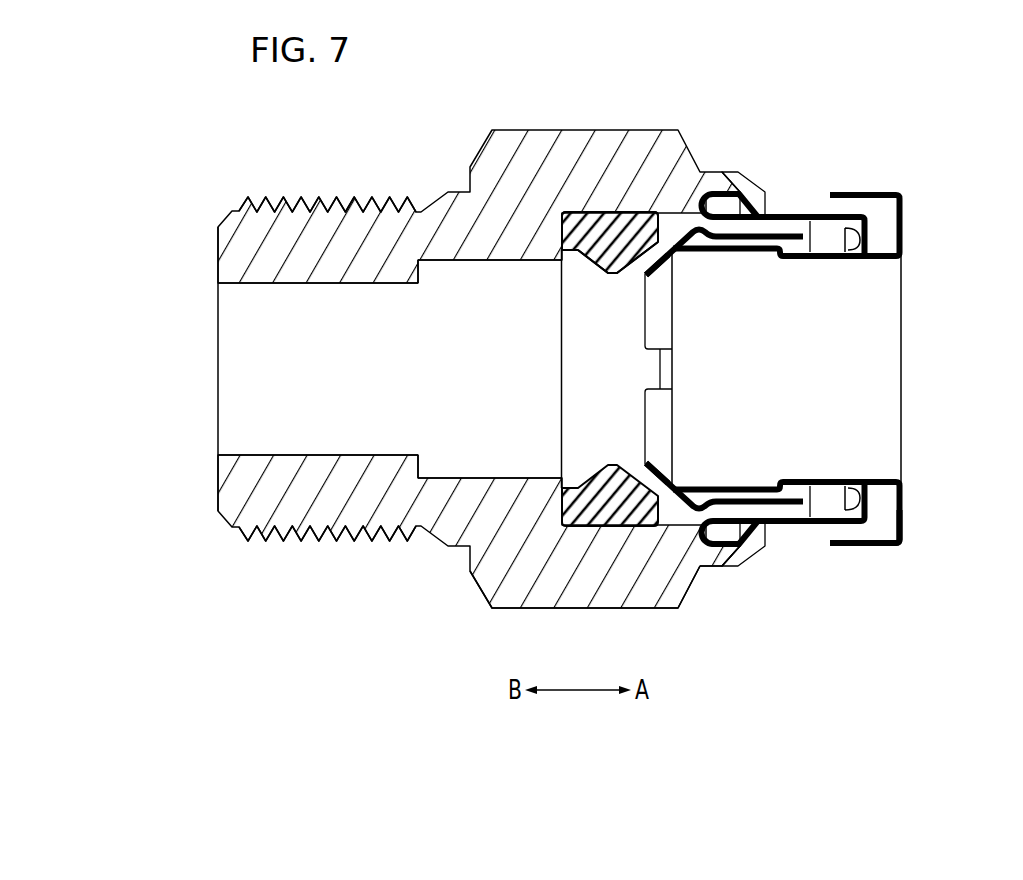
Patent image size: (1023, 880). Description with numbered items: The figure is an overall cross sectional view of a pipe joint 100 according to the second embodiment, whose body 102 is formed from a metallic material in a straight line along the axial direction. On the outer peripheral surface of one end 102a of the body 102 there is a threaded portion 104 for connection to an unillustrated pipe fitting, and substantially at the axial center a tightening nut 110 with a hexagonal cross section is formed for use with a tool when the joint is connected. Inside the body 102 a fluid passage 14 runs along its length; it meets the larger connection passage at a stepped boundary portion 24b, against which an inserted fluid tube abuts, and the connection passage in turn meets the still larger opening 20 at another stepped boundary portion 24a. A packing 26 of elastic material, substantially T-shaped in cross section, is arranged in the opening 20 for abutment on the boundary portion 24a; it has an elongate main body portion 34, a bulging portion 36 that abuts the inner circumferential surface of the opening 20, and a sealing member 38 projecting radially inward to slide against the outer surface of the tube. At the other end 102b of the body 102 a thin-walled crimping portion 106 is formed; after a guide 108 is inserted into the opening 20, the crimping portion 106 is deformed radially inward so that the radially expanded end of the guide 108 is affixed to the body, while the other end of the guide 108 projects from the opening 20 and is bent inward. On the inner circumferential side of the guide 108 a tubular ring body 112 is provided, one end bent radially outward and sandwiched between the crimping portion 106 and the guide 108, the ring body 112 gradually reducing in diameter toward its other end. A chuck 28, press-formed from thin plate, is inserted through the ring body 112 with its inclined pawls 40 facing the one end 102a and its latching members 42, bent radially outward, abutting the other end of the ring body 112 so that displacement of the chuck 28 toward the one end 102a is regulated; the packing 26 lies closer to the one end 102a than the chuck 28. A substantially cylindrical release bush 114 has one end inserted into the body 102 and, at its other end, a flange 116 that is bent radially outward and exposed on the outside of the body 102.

The pipe joint 100 is at (285, 133).
The body 102 is at (326, 188).
The one end of the body 102a is at (232, 256).
The other end of the body 102b is at (718, 560).
The fluid passage 14 is at (255, 362).
The threaded portion 104 is at (313, 541).
The boundary portion 24a is at (566, 252).
The boundary portion 24b is at (421, 268).
The packing 26 is at (633, 200).
The main body portion 34 is at (575, 212).
The bulging portion 36 is at (614, 212).
The sealing member 38 is at (615, 276).
The chuck 28 is at (683, 214).
The inclined pawls 40 is at (656, 264).
The latching members 42 is at (811, 254).
The ring body 112 is at (740, 205).
The crimping portion 106 is at (752, 190).
The guide 108 is at (810, 205).
The release bush 114 is at (912, 211).
The flange 116 is at (847, 548).
The opening 20 is at (679, 516).
The tightening nut 110 is at (516, 594).